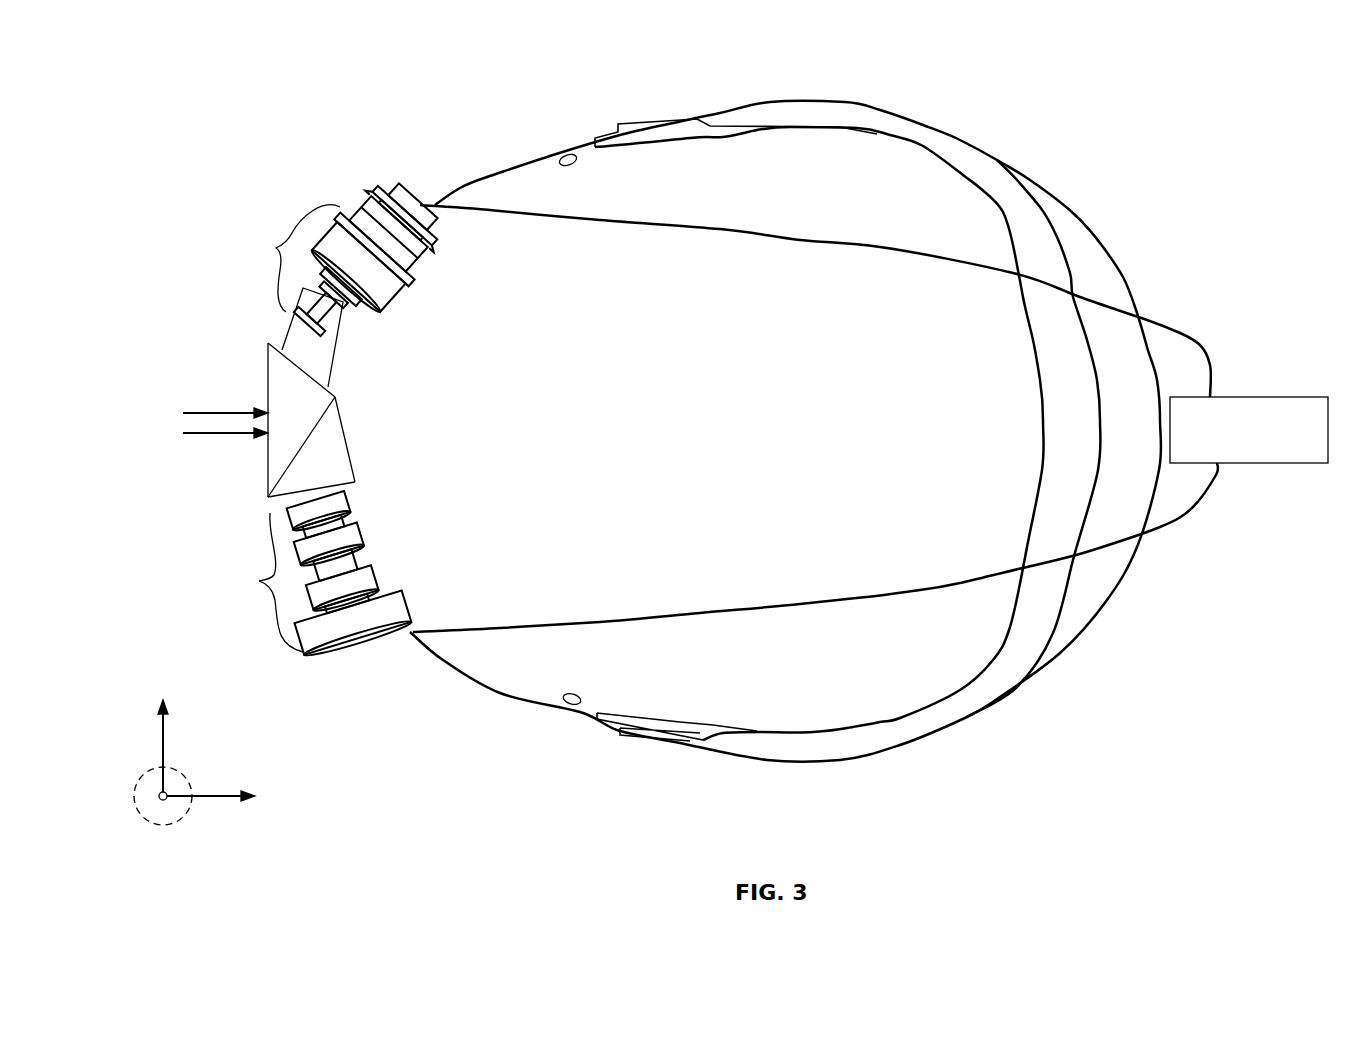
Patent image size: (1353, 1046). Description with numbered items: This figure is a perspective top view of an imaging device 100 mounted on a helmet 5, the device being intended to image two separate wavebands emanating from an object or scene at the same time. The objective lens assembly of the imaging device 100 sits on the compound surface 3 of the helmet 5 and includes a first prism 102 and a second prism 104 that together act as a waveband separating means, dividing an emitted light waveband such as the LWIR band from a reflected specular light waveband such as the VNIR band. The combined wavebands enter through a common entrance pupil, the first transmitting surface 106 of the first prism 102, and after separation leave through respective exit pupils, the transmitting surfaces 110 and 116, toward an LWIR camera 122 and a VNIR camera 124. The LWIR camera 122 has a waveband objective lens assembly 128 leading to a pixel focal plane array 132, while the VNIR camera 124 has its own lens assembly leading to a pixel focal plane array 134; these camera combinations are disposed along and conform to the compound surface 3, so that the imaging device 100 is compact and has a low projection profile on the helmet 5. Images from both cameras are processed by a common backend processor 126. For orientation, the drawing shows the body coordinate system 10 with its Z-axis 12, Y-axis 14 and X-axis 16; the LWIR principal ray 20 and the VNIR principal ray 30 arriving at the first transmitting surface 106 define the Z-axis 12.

The compound surface 3 is at (445, 660).
The helmet 5 is at (724, 406).
The body coordinate system 10 is at (133, 852).
The Z-axis 12 is at (203, 797).
The Y-axis 14 is at (150, 797).
The X-axis 16 is at (163, 745).
The first axial principal ray 20 is at (210, 412).
The axial principal ray of second band 30 is at (210, 435).
The imaging device 100 is at (222, 268).
The first prism 102 is at (268, 348).
The second prism 104 is at (322, 460).
The first transmitting surface 106 is at (268, 470).
The transmitting surface 110 is at (310, 372).
The transmitting surface 116 is at (287, 498).
The LWIR camera 122 is at (283, 198).
The VNIR camera 124 is at (252, 557).
The backend processor 126 is at (1247, 397).
The waveband objective lens assembly 128 is at (257, 582).
The pixel focal plane array 132 is at (383, 188).
The pixel focal plane array 134 is at (350, 650).